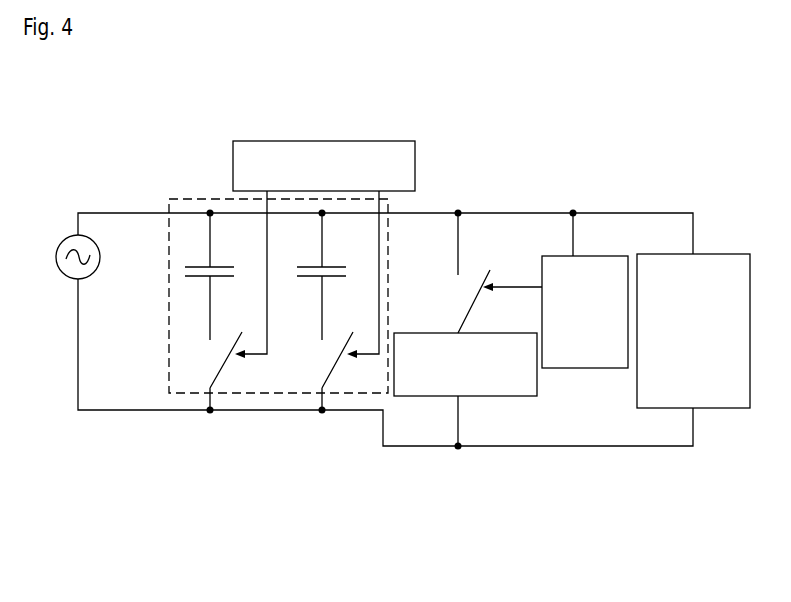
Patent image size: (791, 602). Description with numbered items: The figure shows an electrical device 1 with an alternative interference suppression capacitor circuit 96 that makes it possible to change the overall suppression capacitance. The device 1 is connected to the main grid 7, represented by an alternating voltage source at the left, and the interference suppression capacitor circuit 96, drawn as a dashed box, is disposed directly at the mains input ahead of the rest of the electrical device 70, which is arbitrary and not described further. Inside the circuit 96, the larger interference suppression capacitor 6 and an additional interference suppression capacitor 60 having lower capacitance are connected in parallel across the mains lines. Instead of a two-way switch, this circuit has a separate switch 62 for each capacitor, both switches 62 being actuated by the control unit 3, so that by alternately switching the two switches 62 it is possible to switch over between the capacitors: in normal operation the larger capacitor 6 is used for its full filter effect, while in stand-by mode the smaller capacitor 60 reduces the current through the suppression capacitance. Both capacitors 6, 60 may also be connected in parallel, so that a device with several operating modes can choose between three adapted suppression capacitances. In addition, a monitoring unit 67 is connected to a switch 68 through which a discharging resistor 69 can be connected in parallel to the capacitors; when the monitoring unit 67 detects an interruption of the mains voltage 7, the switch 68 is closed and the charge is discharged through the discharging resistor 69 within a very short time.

The electrical device 1 is at (121, 178).
The control unit 3 is at (233, 177).
The interference suppression capacitor 6 is at (193, 265).
The main grid 7 is at (73, 247).
The additional interference suppression capacitor 60 is at (307, 278).
The switch 62 is at (227, 363).
The monitoring unit 67 is at (568, 265).
The switch 68 is at (478, 300).
The discharging resistor 69 is at (498, 380).
The rest of the electrical device 70 is at (670, 395).
The interference suppression capacitor circuit 96 is at (160, 381).